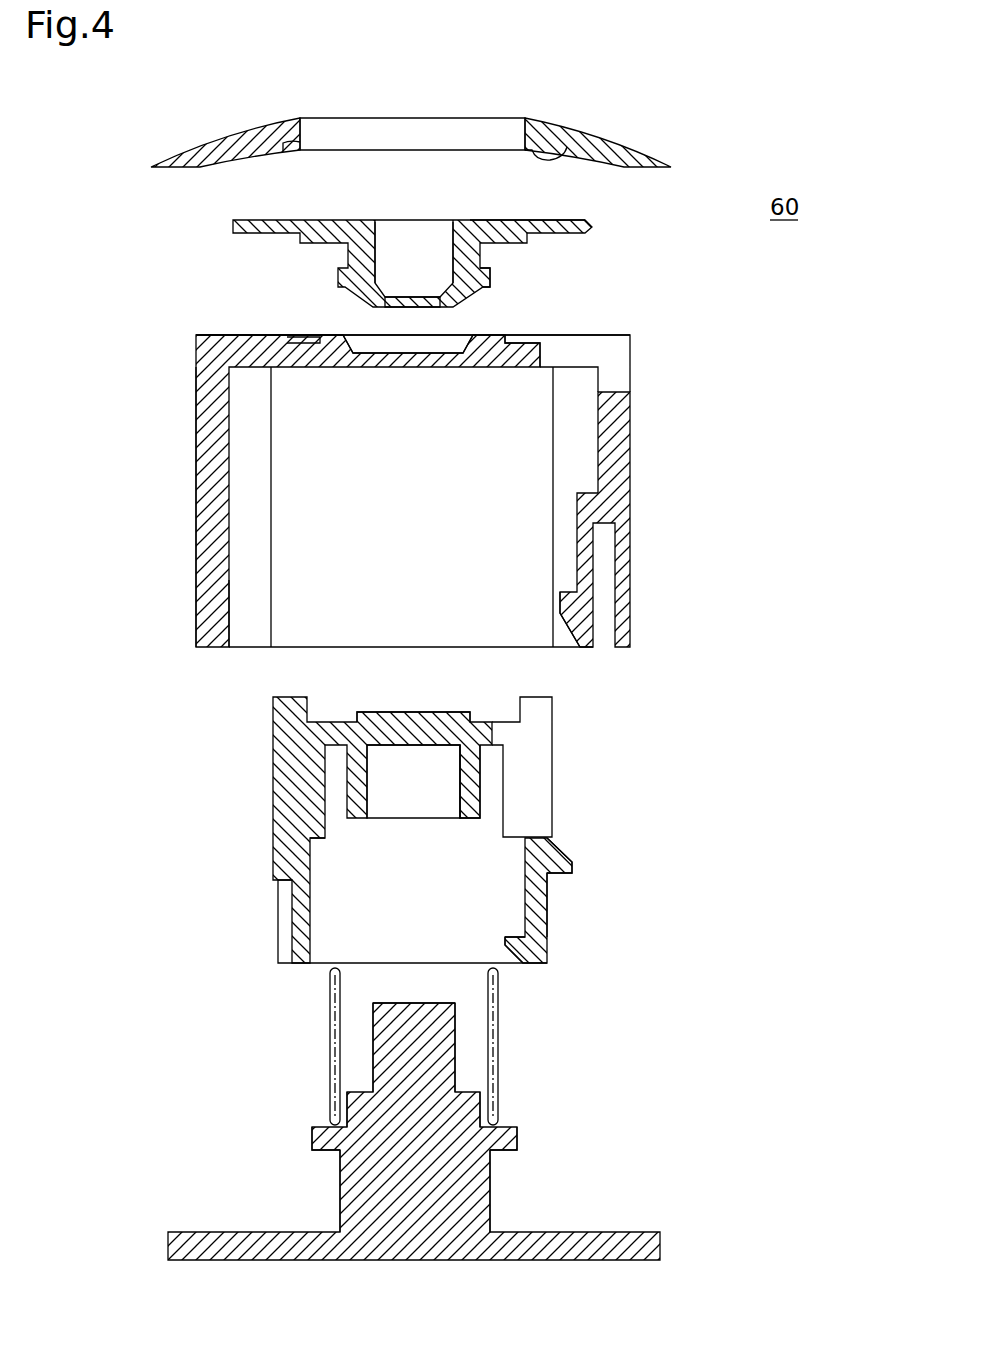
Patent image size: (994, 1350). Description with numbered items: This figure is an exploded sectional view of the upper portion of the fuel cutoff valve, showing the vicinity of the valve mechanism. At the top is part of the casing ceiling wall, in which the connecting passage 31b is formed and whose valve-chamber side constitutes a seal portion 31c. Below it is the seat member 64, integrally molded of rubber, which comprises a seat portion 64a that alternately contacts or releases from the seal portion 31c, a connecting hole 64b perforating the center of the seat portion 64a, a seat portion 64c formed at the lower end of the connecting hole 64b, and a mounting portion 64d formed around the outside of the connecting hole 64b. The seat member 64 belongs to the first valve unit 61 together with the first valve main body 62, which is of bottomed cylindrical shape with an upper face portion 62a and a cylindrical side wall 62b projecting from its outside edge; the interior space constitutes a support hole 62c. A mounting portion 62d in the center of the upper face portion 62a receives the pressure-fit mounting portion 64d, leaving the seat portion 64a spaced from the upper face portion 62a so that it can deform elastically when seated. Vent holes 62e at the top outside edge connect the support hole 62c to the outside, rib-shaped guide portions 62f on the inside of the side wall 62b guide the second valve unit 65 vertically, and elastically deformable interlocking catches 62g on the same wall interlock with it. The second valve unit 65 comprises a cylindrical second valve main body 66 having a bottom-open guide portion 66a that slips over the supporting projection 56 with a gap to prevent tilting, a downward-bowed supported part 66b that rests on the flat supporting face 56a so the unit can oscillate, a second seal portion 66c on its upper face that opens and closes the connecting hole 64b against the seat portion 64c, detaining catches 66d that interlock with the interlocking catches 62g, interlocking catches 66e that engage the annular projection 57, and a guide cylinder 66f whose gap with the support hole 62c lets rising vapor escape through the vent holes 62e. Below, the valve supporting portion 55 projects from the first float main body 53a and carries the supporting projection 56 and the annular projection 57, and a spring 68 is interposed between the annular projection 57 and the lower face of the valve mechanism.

The connecting passage 31b is at (375, 130).
The seal portion 31c is at (546, 146).
The seat member 64 is at (592, 223).
The seat portion 64a is at (500, 221).
The connecting hole 64b is at (416, 250).
The seat portion 64c is at (454, 304).
The mounting portion 64d is at (472, 265).
The first valve unit 61 is at (630, 335).
The first valve main body 62 is at (108, 273).
The upper face portion 62a is at (232, 345).
The side wall 62b is at (194, 392).
The support hole 62c is at (287, 578).
The mounting portion 62d is at (343, 345).
The vent hole 62e is at (598, 352).
The guide portion 62f is at (243, 614).
The interlocking catch 62g is at (593, 620).
The second valve unit 65 is at (553, 745).
The second valve main body 66 is at (273, 812).
The guide portion 66a is at (482, 788).
The supported part 66b is at (460, 742).
The second seal portion 66c is at (433, 757).
The detaining catch 66d is at (552, 862).
The interlocking catch 66e is at (540, 953).
The guide cylinder 66f is at (548, 908).
The spring 68 is at (500, 1065).
The supporting projection 56 is at (373, 1063).
The supporting face 56a is at (420, 1003).
The annular projection 57 is at (313, 1140).
The valve supporting portion 55 is at (340, 1187).
The first float main body 53a is at (640, 1250).